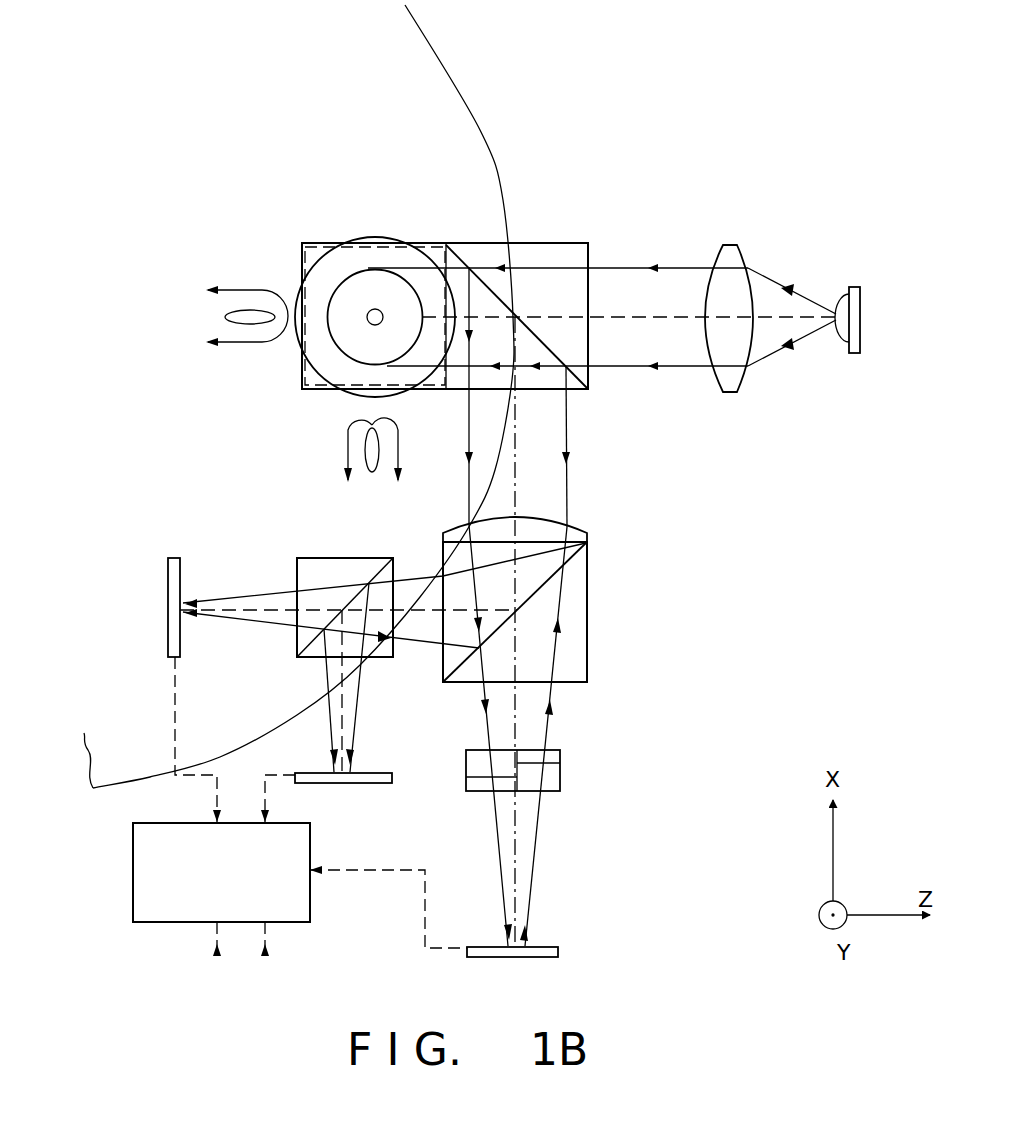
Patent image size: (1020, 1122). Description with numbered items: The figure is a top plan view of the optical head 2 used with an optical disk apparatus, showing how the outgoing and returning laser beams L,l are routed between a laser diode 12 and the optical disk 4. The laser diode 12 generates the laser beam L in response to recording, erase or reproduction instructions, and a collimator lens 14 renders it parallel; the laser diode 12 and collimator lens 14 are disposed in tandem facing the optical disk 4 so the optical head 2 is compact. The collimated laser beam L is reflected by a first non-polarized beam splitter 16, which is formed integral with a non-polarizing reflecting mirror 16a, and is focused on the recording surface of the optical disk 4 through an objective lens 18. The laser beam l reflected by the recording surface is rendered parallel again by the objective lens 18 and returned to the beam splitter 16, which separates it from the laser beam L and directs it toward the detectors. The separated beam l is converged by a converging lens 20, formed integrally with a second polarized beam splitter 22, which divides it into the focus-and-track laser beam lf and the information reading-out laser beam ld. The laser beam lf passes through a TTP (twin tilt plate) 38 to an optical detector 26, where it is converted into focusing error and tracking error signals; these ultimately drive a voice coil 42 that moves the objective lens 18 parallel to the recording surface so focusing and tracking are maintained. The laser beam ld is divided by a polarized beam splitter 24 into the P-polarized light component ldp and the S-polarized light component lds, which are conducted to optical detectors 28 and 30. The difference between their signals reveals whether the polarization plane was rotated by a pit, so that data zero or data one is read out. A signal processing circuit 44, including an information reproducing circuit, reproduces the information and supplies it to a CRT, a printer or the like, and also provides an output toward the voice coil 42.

The optical head 2 is at (672, 435).
The optical disk 4 is at (481, 130).
The laser diode 12 is at (851, 287).
The collimator lens 14 is at (737, 245).
The first non-polarized beam splitter 16 is at (588, 257).
The non-polarizing reflecting mirror 16a is at (316, 390).
The objective lens 18 is at (393, 393).
The converging lens 20 is at (580, 527).
The second polarized beam splitter 22 is at (588, 647).
The polarized beam splitter 24 is at (303, 658).
The optical detector 26 is at (560, 952).
The optical detector 28 is at (393, 783).
The optical detector 30 is at (176, 558).
The TTP (twin tilt plate) 38 is at (562, 778).
The voice coil 42 is at (245, 290).
The signal processing circuit 44 is at (312, 912).
The laser beam L is at (680, 266).
The reflected laser beam l is at (568, 440).
The laser beams L,l is at (413, 265).
The information reading-out laser beam ld is at (418, 645).
The P-polarized light component ldp is at (238, 598).
The S-polarized light component lds is at (355, 740).
The focus-and-track laser beam lf is at (553, 705).